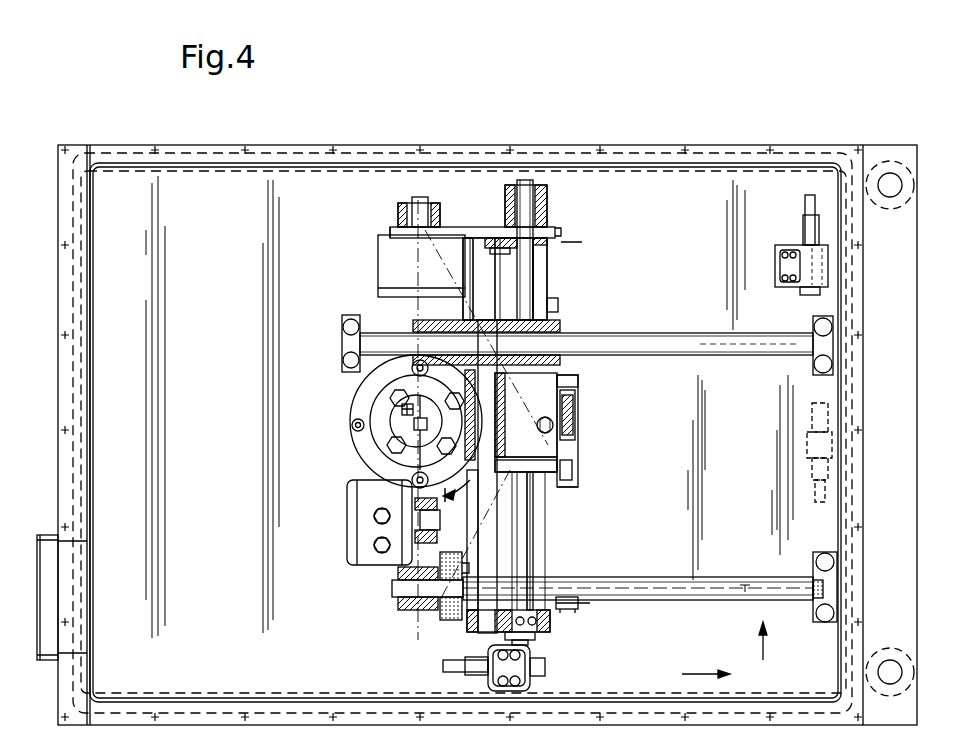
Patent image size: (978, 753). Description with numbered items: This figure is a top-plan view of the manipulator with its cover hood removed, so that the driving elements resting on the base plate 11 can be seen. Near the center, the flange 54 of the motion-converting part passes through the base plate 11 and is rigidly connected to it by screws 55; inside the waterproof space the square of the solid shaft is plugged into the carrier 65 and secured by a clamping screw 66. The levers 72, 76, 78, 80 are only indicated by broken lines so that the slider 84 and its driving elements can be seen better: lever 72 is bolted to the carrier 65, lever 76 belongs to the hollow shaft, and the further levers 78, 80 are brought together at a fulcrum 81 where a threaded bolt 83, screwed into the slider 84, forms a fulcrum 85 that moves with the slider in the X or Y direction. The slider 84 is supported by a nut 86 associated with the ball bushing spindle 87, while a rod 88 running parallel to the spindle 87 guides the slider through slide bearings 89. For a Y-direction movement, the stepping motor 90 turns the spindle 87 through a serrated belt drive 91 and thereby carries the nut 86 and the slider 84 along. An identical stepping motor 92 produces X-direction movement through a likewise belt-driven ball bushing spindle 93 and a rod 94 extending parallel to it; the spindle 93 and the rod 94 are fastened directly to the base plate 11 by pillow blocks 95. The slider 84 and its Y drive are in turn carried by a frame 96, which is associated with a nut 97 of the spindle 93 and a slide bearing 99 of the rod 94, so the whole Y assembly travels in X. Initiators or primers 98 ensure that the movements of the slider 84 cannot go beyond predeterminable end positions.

The base plate 11 is at (738, 152).
The flange 54 is at (358, 388).
The screws 55 is at (352, 424).
The carrier 65 is at (404, 432).
The clamping screw 66 is at (408, 408).
The lever 72 is at (413, 305).
The lever 76 is at (553, 279).
The further lever 78 is at (585, 279).
The further lever 80 is at (617, 279).
The threaded bolt 83 is at (556, 425).
The fulcrum 81 is at (612, 443).
The fulcrum 85 is at (624, 402).
The slider 84 is at (548, 382).
The nut 86 is at (548, 465).
The ball bushing spindle 87 is at (530, 528).
The rod 88 is at (485, 556).
The slide bearings 89 is at (541, 426).
The stepping motor 90 is at (388, 271).
The serrated belt drive 91 is at (496, 184).
The stepping motor 92 is at (363, 502).
The ball bushing spindle 93 is at (727, 590).
The rod 94 is at (735, 356).
The pillow blocks 95 is at (829, 327).
The frame 96 is at (590, 481).
The nut 97 is at (580, 610).
The initiators or primers 98 is at (545, 667).
The slide bearing 99 is at (560, 328).